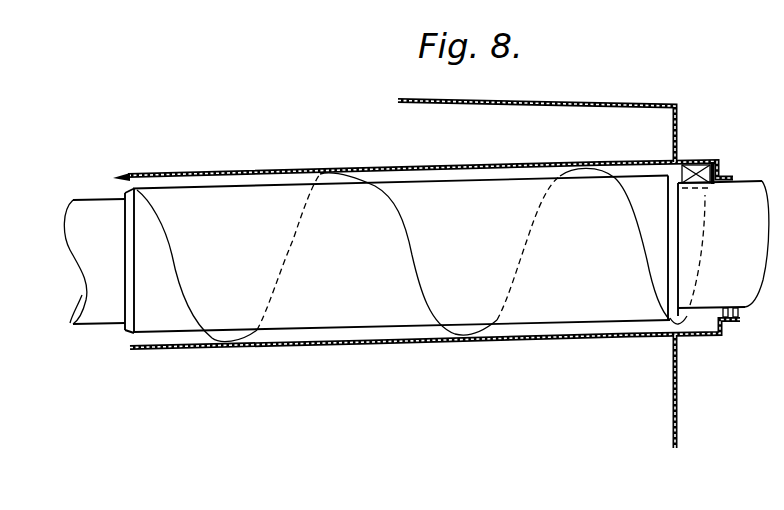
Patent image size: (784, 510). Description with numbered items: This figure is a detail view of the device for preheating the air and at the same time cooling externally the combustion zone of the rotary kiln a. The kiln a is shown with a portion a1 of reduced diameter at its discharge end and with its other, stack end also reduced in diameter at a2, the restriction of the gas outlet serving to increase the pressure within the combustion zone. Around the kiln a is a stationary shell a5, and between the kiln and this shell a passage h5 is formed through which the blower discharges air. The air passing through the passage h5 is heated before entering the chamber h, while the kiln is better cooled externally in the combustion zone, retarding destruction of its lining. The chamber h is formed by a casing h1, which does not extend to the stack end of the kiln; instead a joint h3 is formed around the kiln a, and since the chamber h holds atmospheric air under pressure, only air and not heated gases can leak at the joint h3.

The rotary kiln a is at (152, 253).
The discharge-end portion of reduced diameter a1 is at (80, 200).
The reduced-diameter stack end of the kiln a2 is at (723, 244).
The stationary shell a5 is at (267, 348).
The chamber h is at (423, 152).
The casing h1 is at (577, 101).
The joint h3 is at (677, 157).
The passage h5 is at (523, 331).